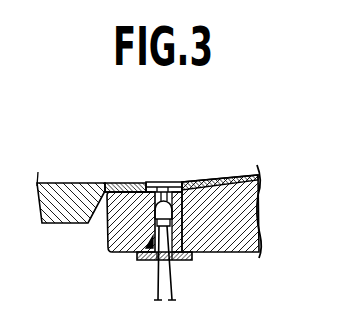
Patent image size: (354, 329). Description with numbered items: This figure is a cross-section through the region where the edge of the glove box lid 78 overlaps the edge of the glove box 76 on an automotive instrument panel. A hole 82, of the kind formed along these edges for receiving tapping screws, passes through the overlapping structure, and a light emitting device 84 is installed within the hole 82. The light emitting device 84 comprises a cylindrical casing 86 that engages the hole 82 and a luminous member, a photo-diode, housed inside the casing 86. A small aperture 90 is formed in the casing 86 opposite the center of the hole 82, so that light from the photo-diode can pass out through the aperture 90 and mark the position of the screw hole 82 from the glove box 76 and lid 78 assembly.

The glove box 76 is at (260, 228).
The glove box lid 78 is at (62, 217).
The hole 82 is at (172, 183).
The light emitting device 84 is at (137, 257).
The cylindrical casing 86 is at (183, 262).
The small aperture 90 is at (158, 192).